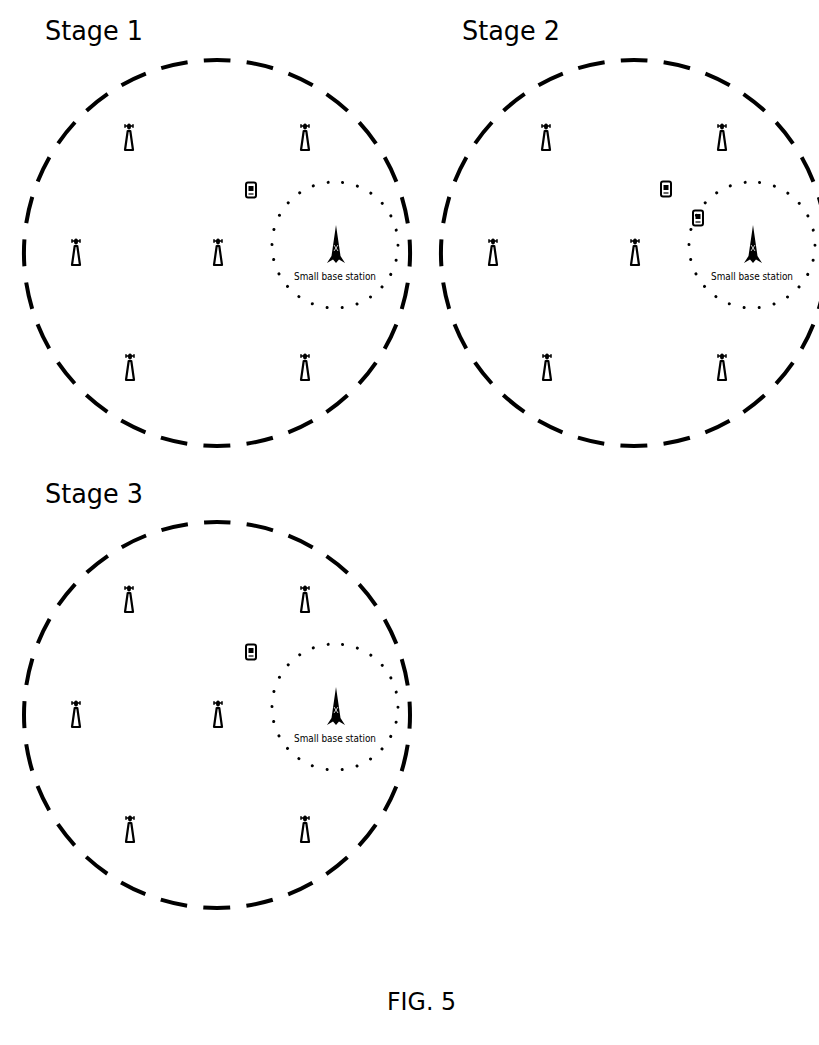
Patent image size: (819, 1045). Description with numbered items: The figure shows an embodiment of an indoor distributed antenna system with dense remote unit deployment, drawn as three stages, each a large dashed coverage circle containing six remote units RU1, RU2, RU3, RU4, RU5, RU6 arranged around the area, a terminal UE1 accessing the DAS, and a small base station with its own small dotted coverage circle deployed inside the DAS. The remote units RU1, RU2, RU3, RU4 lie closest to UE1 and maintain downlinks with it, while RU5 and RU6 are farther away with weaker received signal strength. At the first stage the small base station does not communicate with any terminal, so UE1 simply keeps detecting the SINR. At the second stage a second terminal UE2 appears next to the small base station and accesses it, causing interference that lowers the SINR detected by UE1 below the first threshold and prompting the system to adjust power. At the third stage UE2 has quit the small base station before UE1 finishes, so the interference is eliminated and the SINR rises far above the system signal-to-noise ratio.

The remote unit 1 RU1 is at (338, 381).
The remote unit 2 RU2 is at (514, 381).
The remote unit 3 RU3 is at (285, 496).
The remote unit 4 RU4 is at (427, 496).
The remote unit 5 RU5 is at (339, 611).
The remote unit 6 RU6 is at (514, 611).
The terminal accessing the DAS UE1 is at (457, 434).
The terminal accessing the small base station UE2 is at (700, 231).